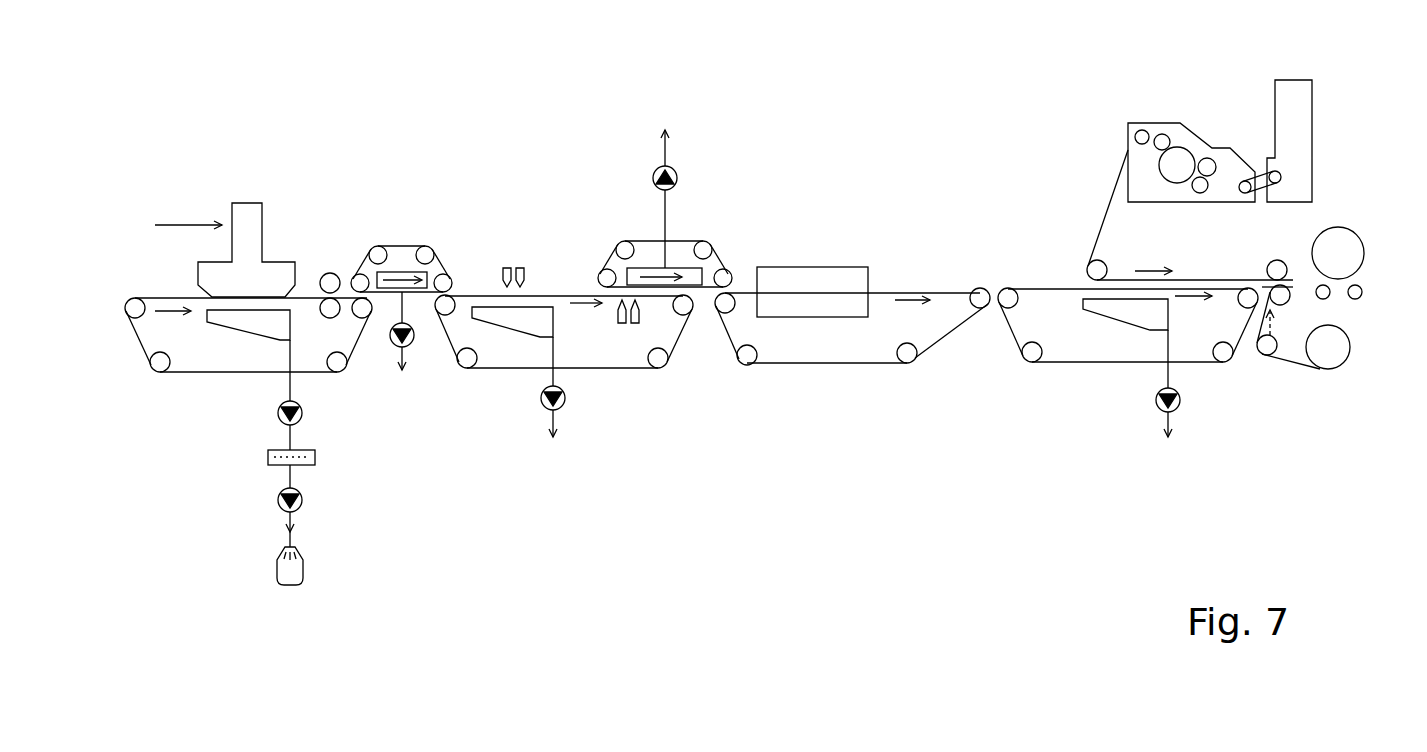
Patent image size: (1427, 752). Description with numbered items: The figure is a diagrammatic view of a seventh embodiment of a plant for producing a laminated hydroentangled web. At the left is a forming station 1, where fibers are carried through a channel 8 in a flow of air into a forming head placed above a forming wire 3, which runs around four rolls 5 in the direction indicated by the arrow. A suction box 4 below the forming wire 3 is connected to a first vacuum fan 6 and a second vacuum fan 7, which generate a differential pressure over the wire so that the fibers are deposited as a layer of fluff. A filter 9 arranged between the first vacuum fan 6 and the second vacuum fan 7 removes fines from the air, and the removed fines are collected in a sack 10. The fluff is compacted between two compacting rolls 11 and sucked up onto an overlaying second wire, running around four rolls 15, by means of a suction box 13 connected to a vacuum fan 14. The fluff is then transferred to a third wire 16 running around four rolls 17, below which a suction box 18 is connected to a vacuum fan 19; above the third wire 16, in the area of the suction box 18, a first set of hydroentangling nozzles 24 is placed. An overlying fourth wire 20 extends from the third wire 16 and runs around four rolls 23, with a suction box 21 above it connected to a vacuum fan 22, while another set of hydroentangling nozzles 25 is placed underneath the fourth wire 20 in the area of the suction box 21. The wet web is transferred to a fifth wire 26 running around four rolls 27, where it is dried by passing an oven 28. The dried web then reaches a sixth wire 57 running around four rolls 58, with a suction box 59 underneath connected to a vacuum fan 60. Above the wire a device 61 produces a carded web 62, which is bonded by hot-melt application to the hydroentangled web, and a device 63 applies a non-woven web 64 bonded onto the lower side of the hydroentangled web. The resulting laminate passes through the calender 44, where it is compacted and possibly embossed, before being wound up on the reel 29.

The forming station 1 is at (245, 195).
The channel 8 is at (168, 225).
The forming wire 3 is at (160, 298).
The rolls 5 is at (126, 304).
The suction box 4 is at (225, 330).
The compacting rolls 11 is at (330, 272).
The rolls 15 is at (377, 246).
The suction box 13 is at (432, 272).
The vacuum fan 14 is at (386, 340).
The hydroentangling nozzles 24 is at (495, 268).
The third wire 16 is at (575, 286).
The rolls 17 is at (668, 360).
The suction box 18 is at (503, 330).
The vacuum fan 19 is at (567, 403).
The hydroentangling nozzles 25 is at (633, 325).
The fourth wire 20 is at (642, 240).
The suction box 21 is at (673, 263).
The vacuum fan 22 is at (677, 170).
The rolls 23 is at (733, 278).
The fifth wire 26 is at (915, 290).
The rolls 27 is at (918, 360).
The oven 28 is at (822, 266).
The sixth wire 57 is at (1037, 289).
The suction box 59 is at (1115, 323).
The vacuum fan 60 is at (1182, 400).
The carded web 62 is at (1106, 192).
The calender 44 is at (1284, 261).
The device for producing a carded web 61 is at (1176, 122).
The reel 29 is at (1332, 226).
The rolls 58 is at (1243, 350).
The non-woven web 64 is at (1293, 366).
The device 63 is at (1352, 355).
The first vacuum fan 6 is at (277, 413).
The filter 9 is at (268, 458).
The second vacuum fan 7 is at (278, 502).
The sack 10 is at (277, 578).